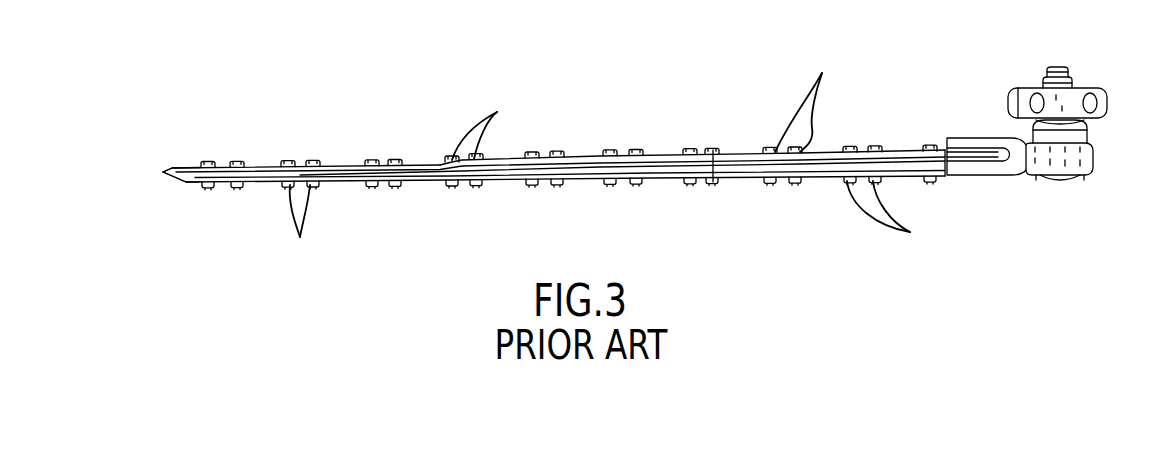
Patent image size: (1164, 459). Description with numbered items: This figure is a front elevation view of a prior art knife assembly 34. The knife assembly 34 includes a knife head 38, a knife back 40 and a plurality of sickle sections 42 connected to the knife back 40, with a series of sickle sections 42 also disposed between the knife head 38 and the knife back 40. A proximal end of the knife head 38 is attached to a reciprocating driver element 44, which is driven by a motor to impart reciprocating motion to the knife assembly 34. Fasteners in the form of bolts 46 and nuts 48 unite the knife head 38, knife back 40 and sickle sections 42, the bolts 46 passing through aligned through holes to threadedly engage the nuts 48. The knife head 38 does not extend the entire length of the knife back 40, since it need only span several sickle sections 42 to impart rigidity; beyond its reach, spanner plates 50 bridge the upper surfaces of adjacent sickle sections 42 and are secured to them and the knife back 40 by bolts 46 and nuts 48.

The knife assembly 34 is at (328, 57).
The knife head 38 is at (737, 157).
The knife back 40 is at (813, 178).
The sickle sections 42 is at (648, 168).
The reciprocating driver element 44 is at (1097, 90).
The bolts 46 is at (616, 222).
The nuts 48 is at (497, 112).
The spanner plates 50 is at (221, 166).